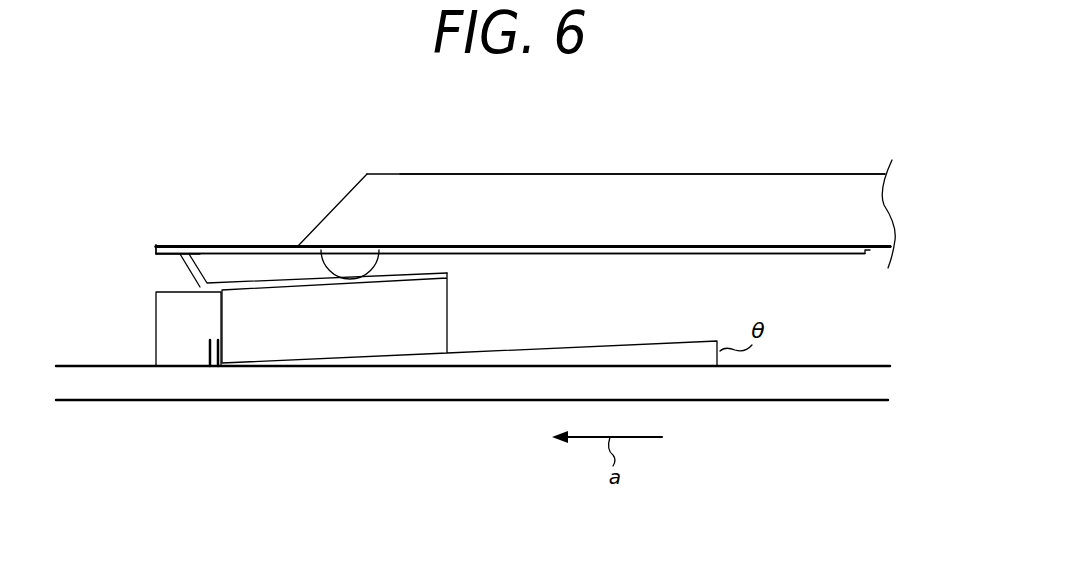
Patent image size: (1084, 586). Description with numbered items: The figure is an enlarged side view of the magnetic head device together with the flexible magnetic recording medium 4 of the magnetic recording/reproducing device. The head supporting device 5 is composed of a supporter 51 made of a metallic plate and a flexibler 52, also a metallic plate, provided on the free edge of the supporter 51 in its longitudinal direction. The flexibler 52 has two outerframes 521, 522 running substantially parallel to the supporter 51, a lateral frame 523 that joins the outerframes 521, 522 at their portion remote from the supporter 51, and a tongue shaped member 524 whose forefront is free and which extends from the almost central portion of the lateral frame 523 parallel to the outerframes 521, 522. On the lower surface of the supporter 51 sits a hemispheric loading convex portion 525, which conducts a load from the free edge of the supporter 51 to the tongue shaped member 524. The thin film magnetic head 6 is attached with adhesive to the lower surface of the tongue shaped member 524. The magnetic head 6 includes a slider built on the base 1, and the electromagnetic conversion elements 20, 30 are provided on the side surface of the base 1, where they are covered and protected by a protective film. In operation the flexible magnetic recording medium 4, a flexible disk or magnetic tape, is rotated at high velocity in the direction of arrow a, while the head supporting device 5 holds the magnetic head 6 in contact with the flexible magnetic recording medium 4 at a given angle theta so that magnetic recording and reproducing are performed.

The base 1 is at (425, 318).
The flexible magnetic recording medium 4 is at (435, 392).
The head supporting device 5 is at (527, 166).
The magnetic head 6 is at (137, 337).
The electromagnetic conversion element 20 is at (219, 344).
The electromagnetic conversion element 30 is at (209, 350).
The supporter 51 is at (636, 186).
The flexibler 52 is at (213, 230).
The outerframe 521 is at (283, 243).
The outerframe 522 is at (510, 202).
The lateral frame 523 is at (168, 245).
The tongue shaped member 524 is at (188, 268).
The hemispheric loading convex portion 525 is at (378, 266).